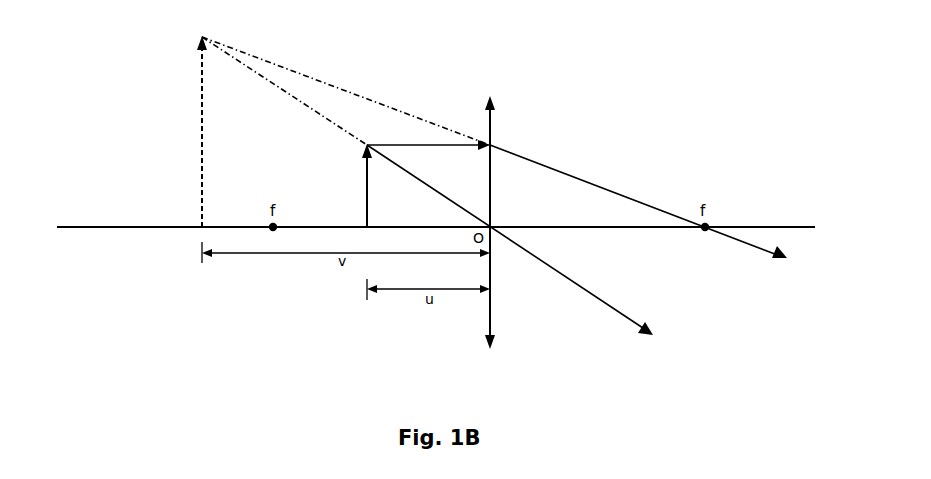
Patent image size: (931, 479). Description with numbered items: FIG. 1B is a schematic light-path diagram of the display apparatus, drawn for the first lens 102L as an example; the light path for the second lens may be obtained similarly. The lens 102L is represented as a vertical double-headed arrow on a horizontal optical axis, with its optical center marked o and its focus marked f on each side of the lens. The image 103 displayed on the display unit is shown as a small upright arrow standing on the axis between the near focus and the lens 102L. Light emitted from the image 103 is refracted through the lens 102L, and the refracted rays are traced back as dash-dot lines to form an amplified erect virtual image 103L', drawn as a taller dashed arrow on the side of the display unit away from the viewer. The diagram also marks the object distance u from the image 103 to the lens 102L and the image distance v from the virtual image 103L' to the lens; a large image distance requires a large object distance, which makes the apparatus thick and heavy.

The first lens 102L is at (490, 78).
The image 103 is at (367, 172).
The amplified erect virtual image 103L' is at (146, 131).